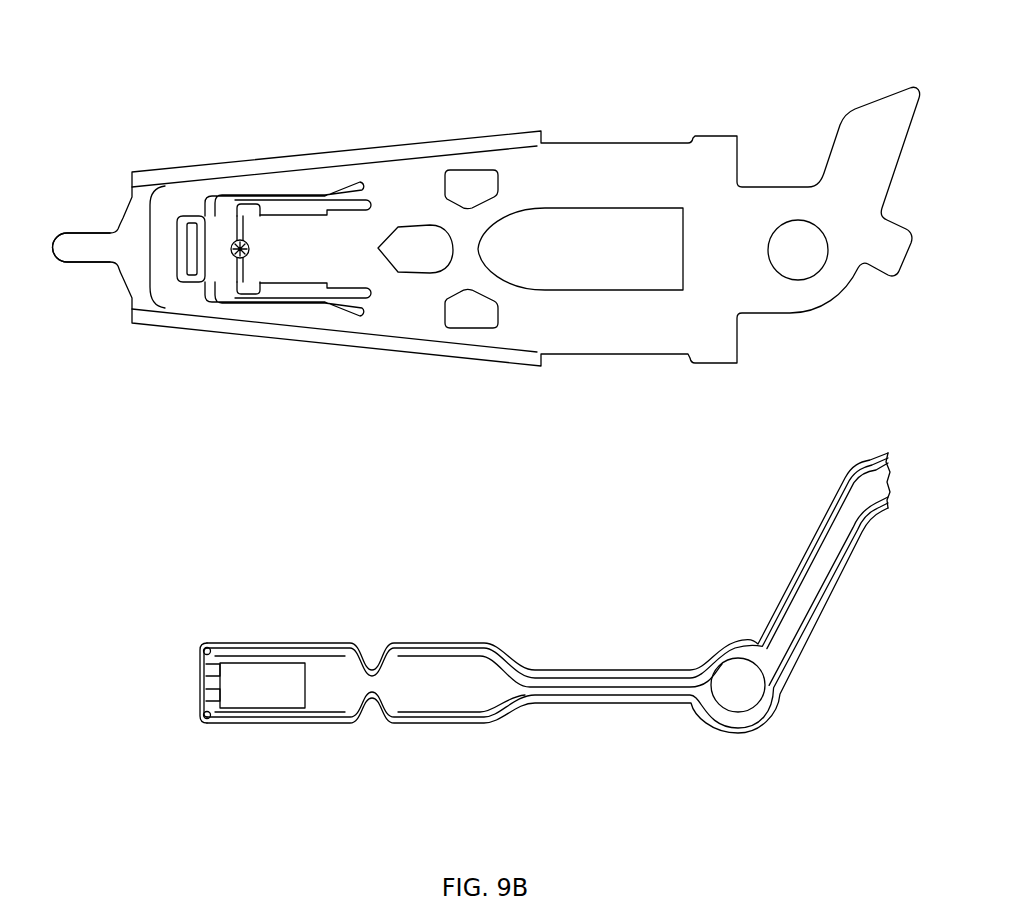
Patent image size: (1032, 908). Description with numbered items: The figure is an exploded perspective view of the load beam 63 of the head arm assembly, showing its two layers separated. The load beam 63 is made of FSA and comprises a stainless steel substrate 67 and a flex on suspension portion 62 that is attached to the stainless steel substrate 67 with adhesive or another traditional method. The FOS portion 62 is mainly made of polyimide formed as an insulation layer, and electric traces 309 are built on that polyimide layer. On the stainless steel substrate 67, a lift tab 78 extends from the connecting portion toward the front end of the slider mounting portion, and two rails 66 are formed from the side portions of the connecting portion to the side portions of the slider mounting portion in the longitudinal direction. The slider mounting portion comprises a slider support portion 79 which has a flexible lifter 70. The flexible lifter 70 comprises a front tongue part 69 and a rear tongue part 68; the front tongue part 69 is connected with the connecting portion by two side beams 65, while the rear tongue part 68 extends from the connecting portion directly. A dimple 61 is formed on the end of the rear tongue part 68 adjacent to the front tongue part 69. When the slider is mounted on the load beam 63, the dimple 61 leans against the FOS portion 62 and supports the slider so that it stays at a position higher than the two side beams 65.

The dimple 61 is at (241, 258).
The flex on suspension (FOS) portion 62 is at (373, 627).
The load beam 63 is at (115, 378).
The side beams 65 is at (303, 300).
The rails 66 is at (442, 350).
The stainless steel substrate 67 is at (465, 122).
The rear tongue part 68 is at (292, 237).
The front tongue part 69 is at (208, 237).
The flexible lifter 70 is at (140, 103).
The lift tab 78 is at (90, 242).
The slider support portion 79 is at (163, 265).
The electric traces 309 is at (245, 650).